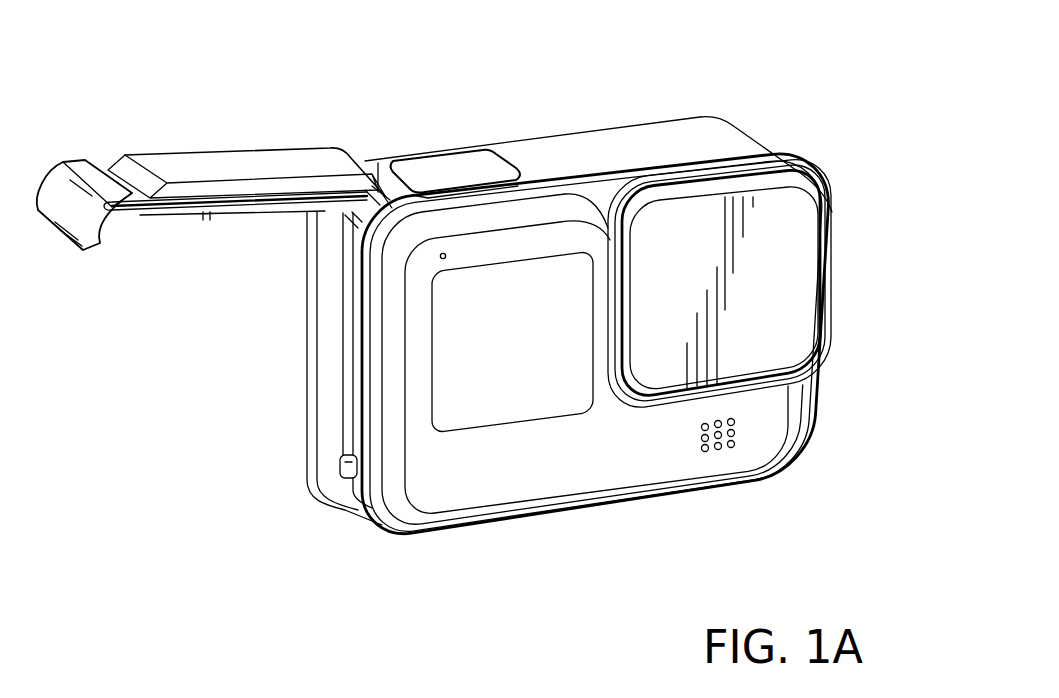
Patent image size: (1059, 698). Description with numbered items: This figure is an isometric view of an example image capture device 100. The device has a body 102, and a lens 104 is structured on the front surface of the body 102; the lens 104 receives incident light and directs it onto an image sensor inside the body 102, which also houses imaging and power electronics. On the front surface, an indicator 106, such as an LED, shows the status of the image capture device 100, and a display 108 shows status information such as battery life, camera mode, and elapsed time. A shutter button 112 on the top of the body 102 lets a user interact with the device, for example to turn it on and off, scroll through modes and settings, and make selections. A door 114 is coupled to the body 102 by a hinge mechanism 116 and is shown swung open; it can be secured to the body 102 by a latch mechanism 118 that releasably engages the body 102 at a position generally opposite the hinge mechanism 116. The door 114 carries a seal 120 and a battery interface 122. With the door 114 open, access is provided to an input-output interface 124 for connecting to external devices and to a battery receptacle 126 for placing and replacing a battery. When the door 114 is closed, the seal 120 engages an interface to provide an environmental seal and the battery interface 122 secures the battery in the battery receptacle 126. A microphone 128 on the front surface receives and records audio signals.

The image capture device 100 is at (624, 272).
The body 102 is at (625, 140).
The lens 104 is at (790, 288).
The indicator 106 is at (441, 257).
The display 108 is at (513, 402).
The shutter button 112 is at (407, 167).
The door 114 is at (262, 162).
The hinge mechanism 116 is at (383, 195).
The latch mechanism 118 is at (63, 197).
The seal 120 is at (146, 210).
The battery interface 122 is at (203, 220).
The input-output (I/O) interface 124 is at (350, 462).
The battery receptacle 126 is at (350, 243).
The microphone 128 is at (718, 450).